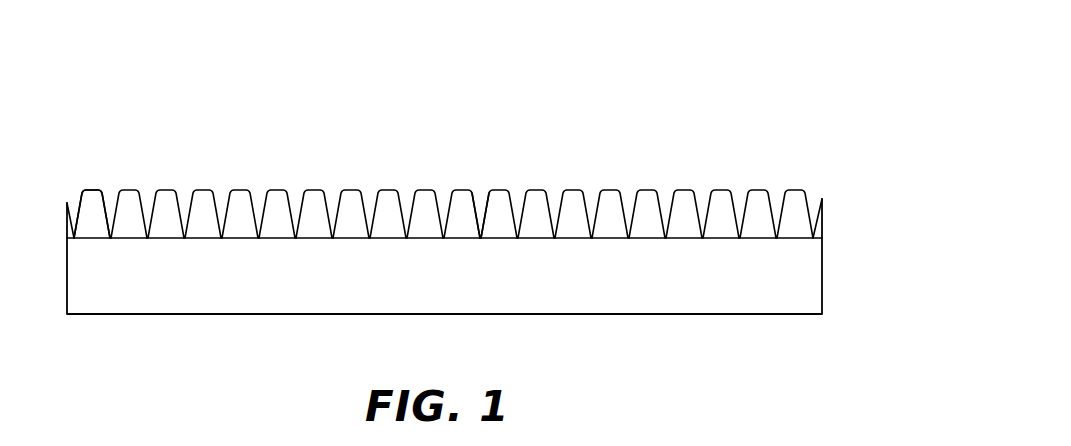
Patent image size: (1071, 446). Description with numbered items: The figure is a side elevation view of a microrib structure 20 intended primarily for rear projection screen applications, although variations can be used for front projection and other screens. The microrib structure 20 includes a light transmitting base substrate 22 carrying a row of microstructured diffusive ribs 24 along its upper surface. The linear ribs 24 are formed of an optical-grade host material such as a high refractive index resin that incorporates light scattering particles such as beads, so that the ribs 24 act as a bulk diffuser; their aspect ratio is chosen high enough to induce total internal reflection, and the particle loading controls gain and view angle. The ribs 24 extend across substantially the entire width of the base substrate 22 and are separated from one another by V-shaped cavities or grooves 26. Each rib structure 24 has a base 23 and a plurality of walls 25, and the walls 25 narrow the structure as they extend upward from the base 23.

The microrib structure 20 is at (680, 78).
The light transmitting base substrate 22 is at (736, 302).
The base 23 is at (97, 242).
The microstructured diffusive ribs 24 is at (795, 187).
The walls 25 is at (106, 202).
The V-shaped cavities or grooves 26 is at (480, 200).